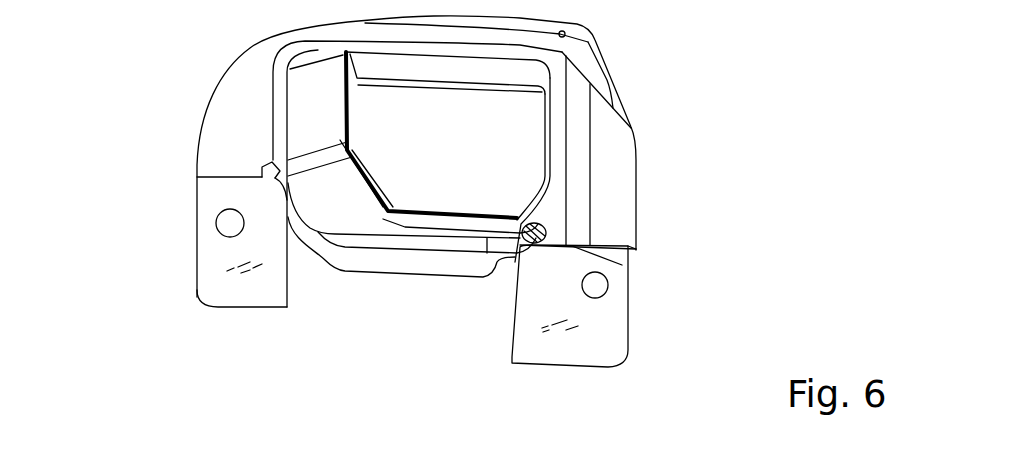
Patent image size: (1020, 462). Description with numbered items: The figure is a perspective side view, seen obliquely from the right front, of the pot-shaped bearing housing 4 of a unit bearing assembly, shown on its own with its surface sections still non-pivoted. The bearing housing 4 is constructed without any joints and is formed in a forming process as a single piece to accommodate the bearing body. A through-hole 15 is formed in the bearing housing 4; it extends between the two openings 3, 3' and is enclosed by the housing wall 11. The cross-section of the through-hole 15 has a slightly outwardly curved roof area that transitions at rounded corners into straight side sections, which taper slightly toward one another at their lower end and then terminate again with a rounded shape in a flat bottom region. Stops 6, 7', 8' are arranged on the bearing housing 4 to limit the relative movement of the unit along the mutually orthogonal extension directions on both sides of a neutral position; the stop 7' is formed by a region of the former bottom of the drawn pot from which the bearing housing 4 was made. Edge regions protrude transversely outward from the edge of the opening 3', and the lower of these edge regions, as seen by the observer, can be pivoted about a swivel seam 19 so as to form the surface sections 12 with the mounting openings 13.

The housing 3 is at (480, 156).
The lower housing part 3' is at (405, 334).
The corner cover 4 is at (590, 60).
The frame trim 6 is at (318, 108).
The upper trim 7' is at (301, 82).
The rail 8' is at (428, 251).
The lower trim 11 is at (433, 226).
The mounting plate 12 is at (250, 298).
The mounting hole 13 is at (226, 224).
The window opening 15 is at (492, 163).
The bracket 19 is at (198, 177).